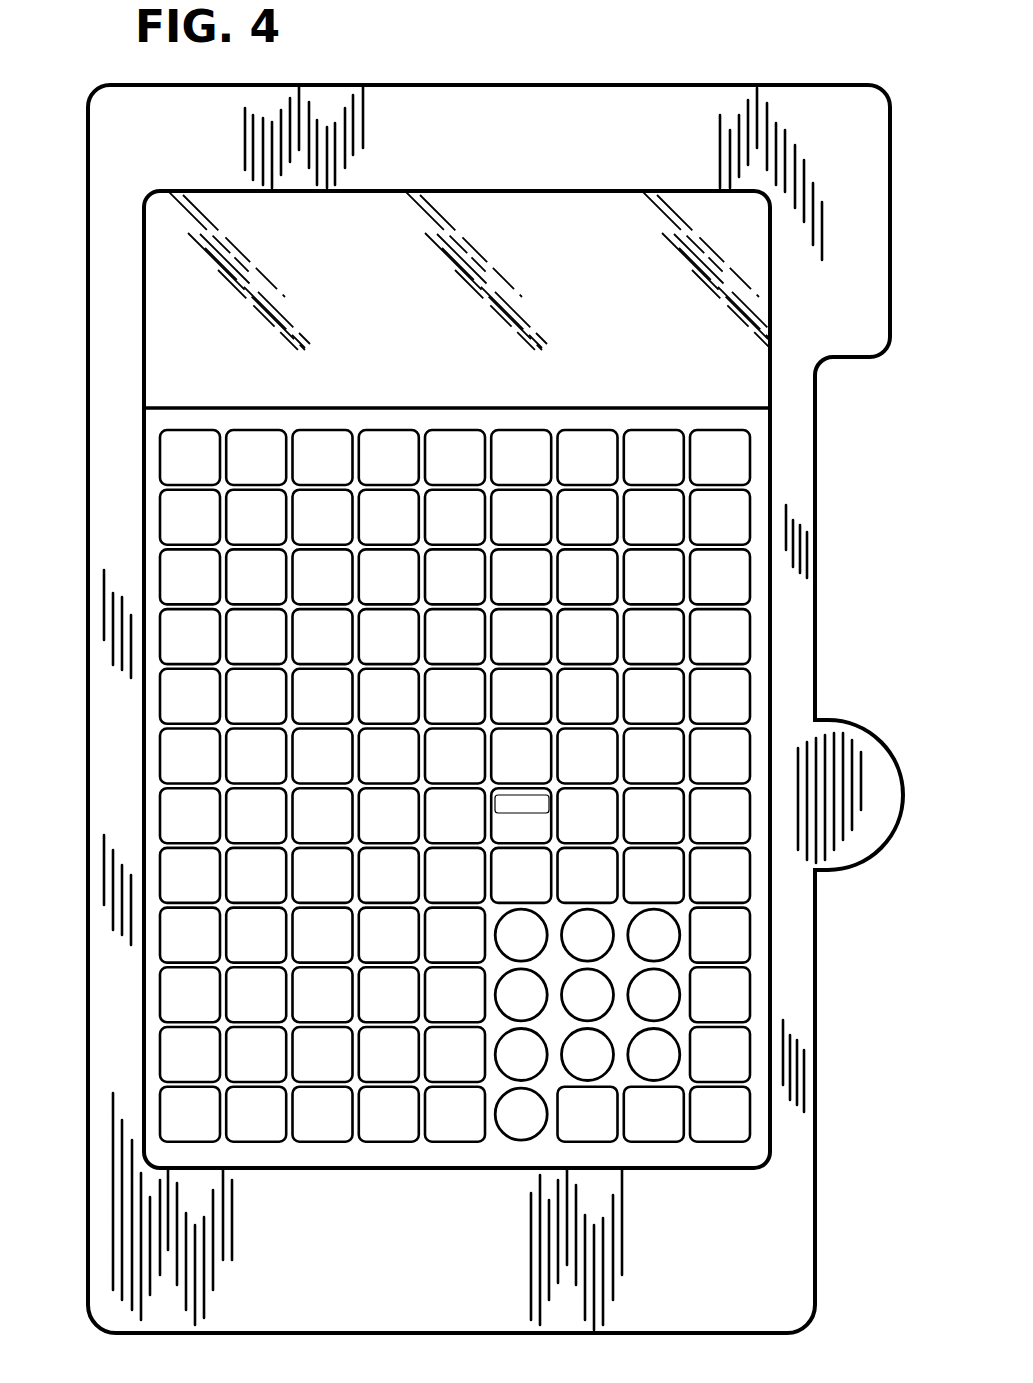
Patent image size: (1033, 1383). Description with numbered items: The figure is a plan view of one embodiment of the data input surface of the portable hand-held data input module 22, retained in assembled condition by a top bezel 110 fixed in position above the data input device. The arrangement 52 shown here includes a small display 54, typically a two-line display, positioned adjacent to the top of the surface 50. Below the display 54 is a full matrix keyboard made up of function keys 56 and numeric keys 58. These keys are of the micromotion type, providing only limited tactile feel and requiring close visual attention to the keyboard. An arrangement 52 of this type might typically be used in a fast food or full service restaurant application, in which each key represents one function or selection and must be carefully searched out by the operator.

The top bezel 110 is at (540, 85).
The portable hand-held data input module 22 is at (143, 780).
The surface 50 is at (160, 337).
The display 54 is at (742, 267).
The arrangement 52 is at (143, 493).
The function keys 56 is at (742, 452).
The numeric keys 58 is at (668, 943).